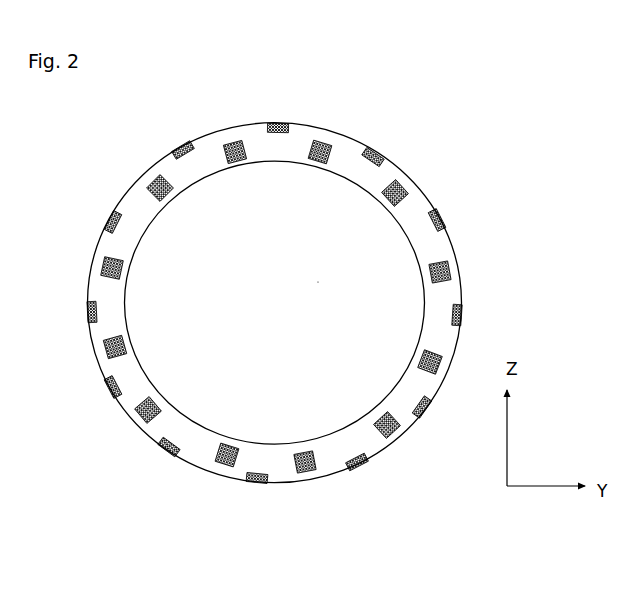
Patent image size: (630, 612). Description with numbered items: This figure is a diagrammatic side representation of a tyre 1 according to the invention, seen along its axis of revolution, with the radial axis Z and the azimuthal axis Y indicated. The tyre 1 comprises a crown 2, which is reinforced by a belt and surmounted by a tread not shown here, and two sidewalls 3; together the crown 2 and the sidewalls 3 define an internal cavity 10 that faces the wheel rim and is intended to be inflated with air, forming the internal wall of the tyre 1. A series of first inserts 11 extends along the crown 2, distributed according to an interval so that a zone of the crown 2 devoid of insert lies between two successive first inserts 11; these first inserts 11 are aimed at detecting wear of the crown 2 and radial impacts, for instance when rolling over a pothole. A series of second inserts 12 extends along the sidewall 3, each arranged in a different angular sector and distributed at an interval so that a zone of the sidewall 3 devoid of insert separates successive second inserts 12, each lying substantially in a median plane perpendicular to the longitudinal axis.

The tyre 1 is at (315, 297).
The crown 2 is at (229, 122).
The sidewall 3 is at (450, 292).
The internal cavity 10 is at (316, 285).
The first insert 11 is at (440, 213).
The second insert 12 is at (326, 139).